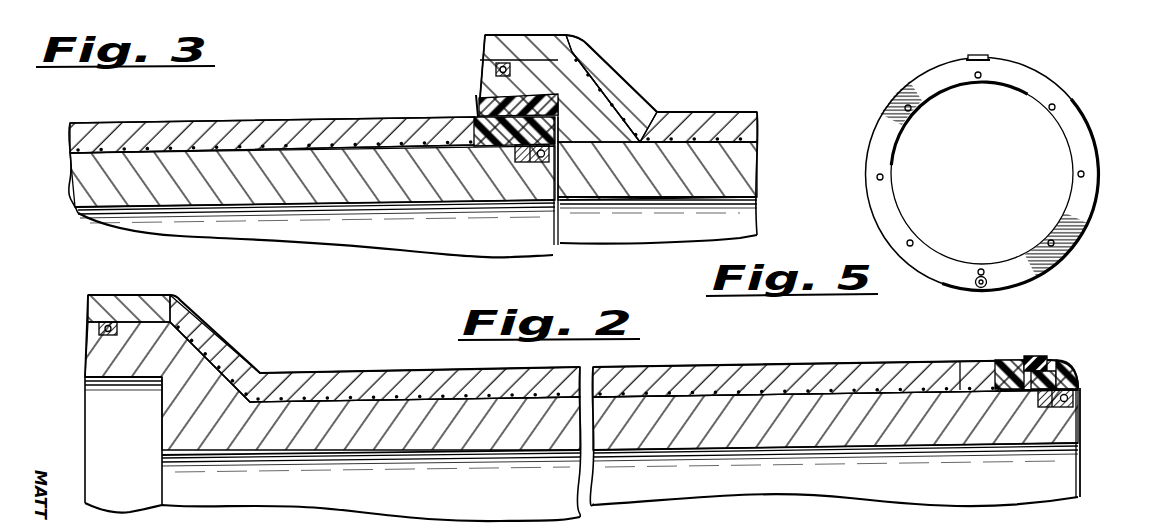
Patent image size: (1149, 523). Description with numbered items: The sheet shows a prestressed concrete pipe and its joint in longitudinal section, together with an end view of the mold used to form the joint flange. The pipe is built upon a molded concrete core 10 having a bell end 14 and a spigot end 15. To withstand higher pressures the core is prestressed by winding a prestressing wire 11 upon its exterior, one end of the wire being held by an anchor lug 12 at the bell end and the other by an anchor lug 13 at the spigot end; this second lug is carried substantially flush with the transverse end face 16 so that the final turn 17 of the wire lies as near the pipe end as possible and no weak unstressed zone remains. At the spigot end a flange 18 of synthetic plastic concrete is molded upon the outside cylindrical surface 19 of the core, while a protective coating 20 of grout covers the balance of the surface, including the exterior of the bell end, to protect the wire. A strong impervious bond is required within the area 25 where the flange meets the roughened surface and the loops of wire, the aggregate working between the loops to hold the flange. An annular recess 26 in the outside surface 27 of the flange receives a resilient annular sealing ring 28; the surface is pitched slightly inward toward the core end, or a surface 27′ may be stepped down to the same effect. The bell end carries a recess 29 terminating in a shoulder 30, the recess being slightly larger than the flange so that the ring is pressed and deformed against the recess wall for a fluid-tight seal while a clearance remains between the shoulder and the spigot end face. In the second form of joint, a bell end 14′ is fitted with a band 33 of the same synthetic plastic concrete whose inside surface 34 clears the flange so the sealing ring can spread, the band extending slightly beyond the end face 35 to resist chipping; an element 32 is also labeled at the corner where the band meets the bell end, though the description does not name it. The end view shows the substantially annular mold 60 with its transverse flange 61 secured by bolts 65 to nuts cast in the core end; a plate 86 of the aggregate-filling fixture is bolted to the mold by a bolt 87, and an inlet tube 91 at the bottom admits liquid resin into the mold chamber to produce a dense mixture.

In FIG. 3, the molded concrete core 10 is at (80, 173).
In FIG. 2, the molded concrete core 10 is at (413, 410).
In FIG. 3, the prestressing wire 11 is at (230, 150).
In FIG. 2, the prestressing wire 11 is at (188, 346).
In FIG. 2, the anchor lug 12 is at (97, 333).
In FIG. 3, the anchor lug 13 is at (540, 165).
In FIG. 2, the anchor lug 13 is at (1077, 398).
In FIG. 2, the bell end 14 is at (84, 331).
In FIG. 3, the bell end 14′ is at (549, 72).
In FIG. 3, the spigot end 15 is at (562, 233).
In FIG. 2, the spigot end 15 is at (1086, 426).
In FIG. 2, the transverse end face 16 is at (1080, 414).
In FIG. 2, the final turn 17 is at (1079, 382).
In FIG. 3, the flange 18 is at (473, 128).
In FIG. 2, the flange 18 is at (1064, 365).
In FIG. 2, the outside cylindrical surface 19 is at (961, 390).
In FIG. 3, the protective coating 20 is at (155, 125).
In FIG. 2, the protective coating 20 is at (322, 380).
In FIG. 2, the bond area 25 is at (1027, 392).
In FIG. 2, the annular recess 26 is at (1046, 346).
In FIG. 2, the outside surface 27 is at (1011, 366).
In FIG. 2, the stepped surface 27′ is at (1042, 362).
In FIG. 3, the annular sealing ring 28 is at (512, 133).
In FIG. 2, the annular sealing ring 28 is at (1046, 369).
In FIG. 2, the recess 29 is at (115, 379).
In FIG. 2, the shoulder 30 is at (162, 433).
In FIG. 3, the flashing 32 is at (480, 97).
In FIG. 3, the band 33 is at (478, 108).
In FIG. 3, the inside surface 34 is at (558, 117).
In FIG. 3, the end face 35 is at (488, 70).
In FIG. 5, the mold 60 is at (1098, 138).
In FIG. 5, the transverse flange 61 is at (1069, 124).
In FIG. 5, the bolts 65 is at (1084, 176).
In FIG. 5, the plate 86 is at (990, 58).
In FIG. 5, the bolt 87 is at (981, 55).
In FIG. 5, the inlet tube 91 is at (976, 286).